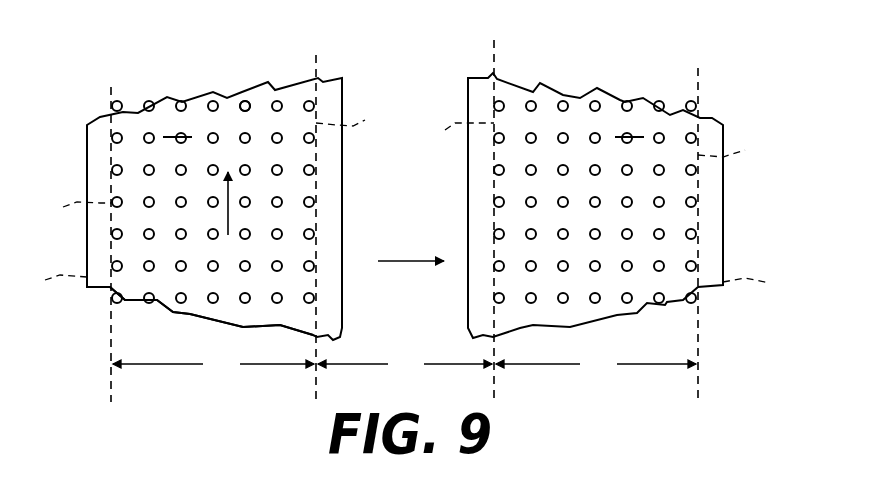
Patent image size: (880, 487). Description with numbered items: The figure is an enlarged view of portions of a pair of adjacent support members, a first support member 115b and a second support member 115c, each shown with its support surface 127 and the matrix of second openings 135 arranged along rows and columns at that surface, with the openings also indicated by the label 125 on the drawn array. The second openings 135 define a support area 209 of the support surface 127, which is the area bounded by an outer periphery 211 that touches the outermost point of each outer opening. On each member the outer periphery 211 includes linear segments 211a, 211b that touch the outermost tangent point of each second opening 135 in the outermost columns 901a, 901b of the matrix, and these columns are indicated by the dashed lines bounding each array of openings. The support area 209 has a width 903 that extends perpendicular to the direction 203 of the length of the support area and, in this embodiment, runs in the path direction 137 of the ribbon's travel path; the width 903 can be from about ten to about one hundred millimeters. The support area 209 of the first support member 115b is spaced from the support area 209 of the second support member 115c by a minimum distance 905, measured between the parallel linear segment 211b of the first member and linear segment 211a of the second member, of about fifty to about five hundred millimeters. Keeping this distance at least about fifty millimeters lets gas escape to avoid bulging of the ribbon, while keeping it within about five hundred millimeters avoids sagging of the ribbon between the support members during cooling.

The first support member 115b is at (86, 315).
The second support member 115c is at (721, 309).
The apertures 125 is at (212, 100).
The support surface 127 is at (403, 126).
The second openings 135 is at (245, 97).
The path direction 137 is at (407, 261).
The direction of the length 203 is at (228, 214).
The support area 209 is at (150, 290).
The outer periphery 211 is at (99, 269).
The linear segment 211a is at (265, 185).
The linear segment 211b is at (544, 127).
The outermost column 901a is at (125, 104).
The outermost column 901b is at (310, 95).
The width 903 is at (404, 366).
The minimum distance 905 is at (405, 366).